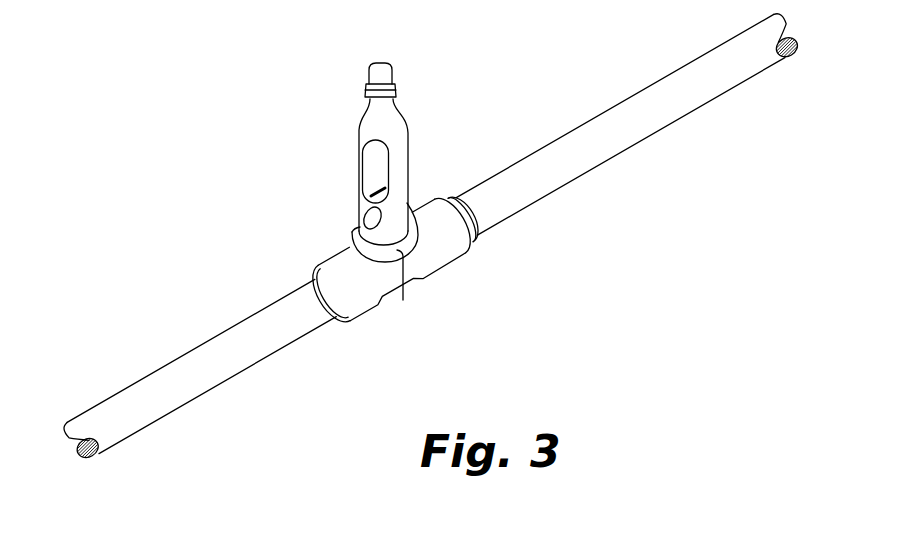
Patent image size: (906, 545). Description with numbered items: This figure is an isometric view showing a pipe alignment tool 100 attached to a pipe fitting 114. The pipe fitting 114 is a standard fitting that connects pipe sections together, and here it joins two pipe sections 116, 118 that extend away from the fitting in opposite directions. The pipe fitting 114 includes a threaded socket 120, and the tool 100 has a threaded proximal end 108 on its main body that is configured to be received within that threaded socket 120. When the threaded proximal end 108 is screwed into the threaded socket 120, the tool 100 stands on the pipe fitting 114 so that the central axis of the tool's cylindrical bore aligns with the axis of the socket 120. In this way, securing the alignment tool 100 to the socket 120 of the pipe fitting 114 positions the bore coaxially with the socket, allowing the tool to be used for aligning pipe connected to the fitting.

The pipe alignment tool 100 is at (390, 132).
The threaded proximal end 108 is at (352, 232).
The pipe fitting 114 is at (443, 262).
The pipe section 116 is at (642, 132).
The pipe section 118 is at (150, 413).
The threaded socket 120 is at (403, 300).